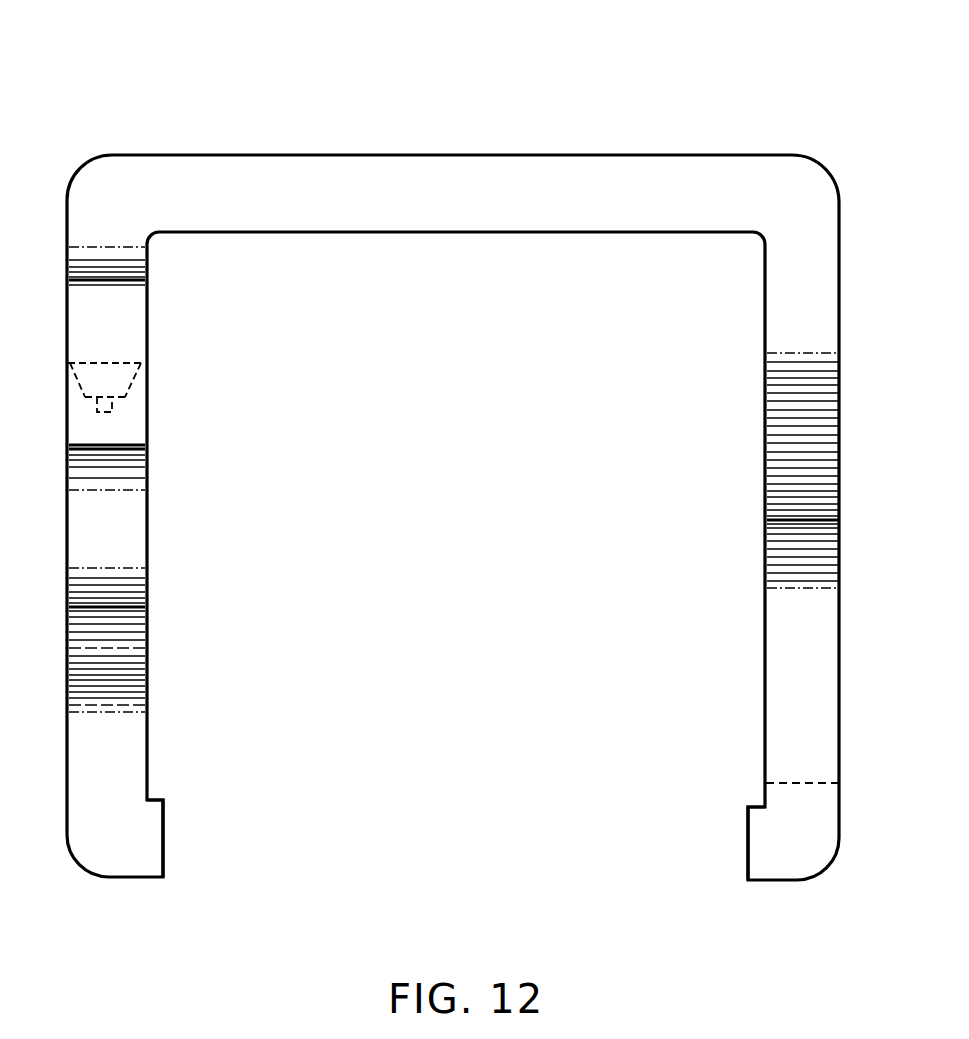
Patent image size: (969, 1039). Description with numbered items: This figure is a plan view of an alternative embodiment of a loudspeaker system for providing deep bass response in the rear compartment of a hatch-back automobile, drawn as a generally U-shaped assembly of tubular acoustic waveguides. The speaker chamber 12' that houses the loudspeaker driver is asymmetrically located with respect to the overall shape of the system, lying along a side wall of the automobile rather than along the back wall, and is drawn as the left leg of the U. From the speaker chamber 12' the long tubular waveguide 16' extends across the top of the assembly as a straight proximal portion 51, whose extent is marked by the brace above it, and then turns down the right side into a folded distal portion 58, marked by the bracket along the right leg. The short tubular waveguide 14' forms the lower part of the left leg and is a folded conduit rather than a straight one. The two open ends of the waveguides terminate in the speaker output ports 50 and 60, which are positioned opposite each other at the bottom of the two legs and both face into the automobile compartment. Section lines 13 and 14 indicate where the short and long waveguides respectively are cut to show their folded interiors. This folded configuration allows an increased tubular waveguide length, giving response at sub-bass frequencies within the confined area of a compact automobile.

The straight proximal portion 51 is at (838, 79).
The long tubular waveguide 16' is at (456, 171).
The speaker chamber 12' is at (145, 368).
The short tubular waveguide 14' is at (146, 665).
The speaker output port 50 is at (163, 825).
The speaker output port 60 is at (747, 838).
The folded distal portion 58 is at (848, 882).
The section line 13- 13 is at (168, 105).
The section line 14- 14 is at (710, 503).